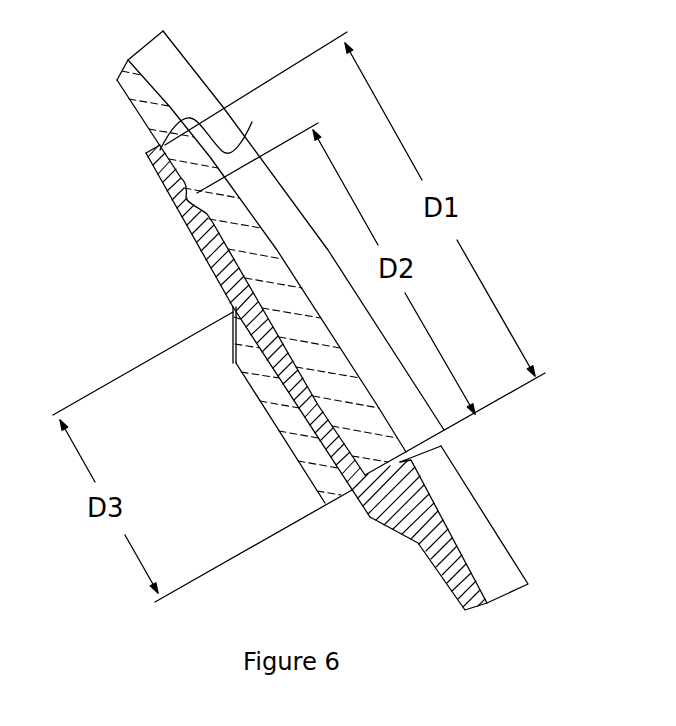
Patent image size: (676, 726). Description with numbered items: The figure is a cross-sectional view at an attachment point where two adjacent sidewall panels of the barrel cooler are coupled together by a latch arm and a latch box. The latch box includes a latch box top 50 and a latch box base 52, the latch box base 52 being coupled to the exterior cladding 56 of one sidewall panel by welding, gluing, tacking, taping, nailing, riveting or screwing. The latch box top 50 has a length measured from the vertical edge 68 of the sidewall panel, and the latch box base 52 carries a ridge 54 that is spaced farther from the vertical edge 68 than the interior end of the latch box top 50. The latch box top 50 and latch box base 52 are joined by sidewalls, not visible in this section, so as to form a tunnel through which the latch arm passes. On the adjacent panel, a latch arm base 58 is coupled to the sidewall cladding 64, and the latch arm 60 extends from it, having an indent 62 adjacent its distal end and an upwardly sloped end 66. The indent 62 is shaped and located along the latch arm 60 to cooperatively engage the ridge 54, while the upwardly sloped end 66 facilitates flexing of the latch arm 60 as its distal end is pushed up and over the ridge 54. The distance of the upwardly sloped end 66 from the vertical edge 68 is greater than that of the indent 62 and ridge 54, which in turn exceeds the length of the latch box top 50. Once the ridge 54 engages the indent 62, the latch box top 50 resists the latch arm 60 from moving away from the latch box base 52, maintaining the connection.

The latch box top 50 is at (297, 442).
The latch box base 52 is at (131, 103).
The ridge 54 is at (197, 200).
The exterior cladding 56 is at (163, 43).
The latch arm base 58 is at (462, 597).
The latch arm 60 is at (210, 255).
The indent 62 is at (175, 200).
The sidewall cladding 64 is at (480, 497).
The upwardly sloped end 66 is at (241, 138).
The vertical edge 68 is at (433, 438).